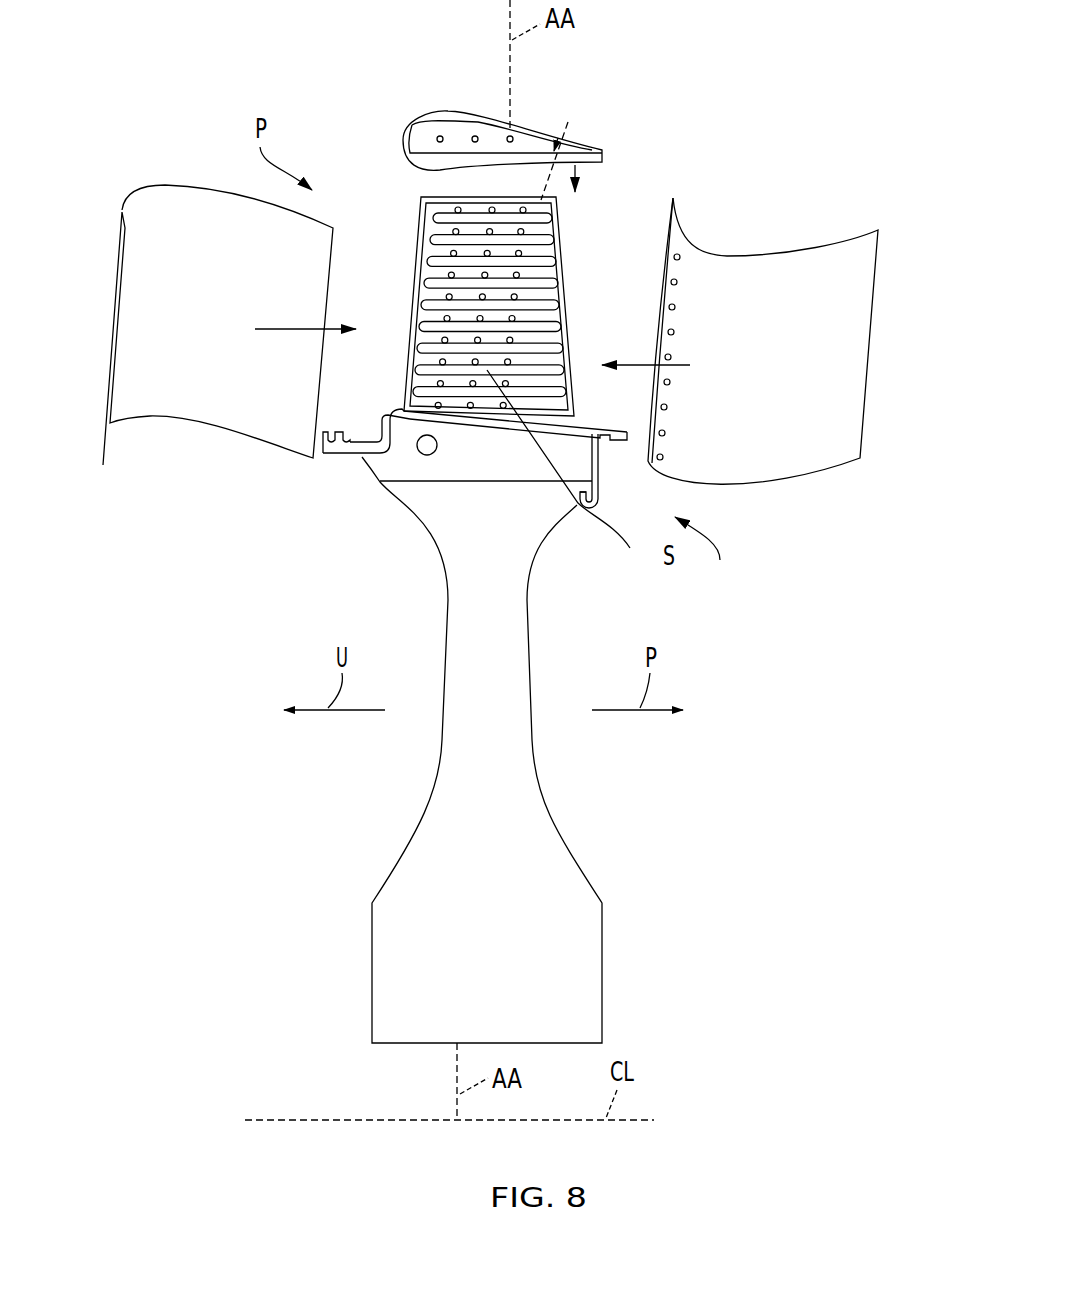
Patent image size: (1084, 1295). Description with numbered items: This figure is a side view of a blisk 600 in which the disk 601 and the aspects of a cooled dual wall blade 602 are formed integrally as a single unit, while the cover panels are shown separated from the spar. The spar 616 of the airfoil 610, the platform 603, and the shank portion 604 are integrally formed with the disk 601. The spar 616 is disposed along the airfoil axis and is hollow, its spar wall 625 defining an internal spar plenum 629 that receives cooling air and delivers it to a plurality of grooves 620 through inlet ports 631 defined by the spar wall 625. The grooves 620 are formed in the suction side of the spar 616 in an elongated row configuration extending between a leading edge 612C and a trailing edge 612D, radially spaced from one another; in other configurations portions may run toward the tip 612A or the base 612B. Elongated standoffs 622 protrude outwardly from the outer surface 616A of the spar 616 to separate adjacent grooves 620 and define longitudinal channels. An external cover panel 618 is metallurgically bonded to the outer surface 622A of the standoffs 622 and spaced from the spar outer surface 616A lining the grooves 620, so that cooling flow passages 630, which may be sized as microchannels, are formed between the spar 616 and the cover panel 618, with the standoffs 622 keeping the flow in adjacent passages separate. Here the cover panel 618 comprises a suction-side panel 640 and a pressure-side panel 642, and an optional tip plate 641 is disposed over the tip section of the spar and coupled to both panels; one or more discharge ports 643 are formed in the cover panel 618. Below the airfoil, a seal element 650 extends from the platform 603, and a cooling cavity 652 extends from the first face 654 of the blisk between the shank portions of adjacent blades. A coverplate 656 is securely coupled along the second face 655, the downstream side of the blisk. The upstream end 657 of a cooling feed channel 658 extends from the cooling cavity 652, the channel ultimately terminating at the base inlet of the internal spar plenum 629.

The blisk 600 is at (798, 140).
The disk 601 is at (517, 770).
The blade 602 is at (700, 203).
The platform 603 is at (460, 423).
The shank portion 604 is at (402, 470).
The airfoil 610 is at (405, 187).
The tip 612A is at (586, 127).
The base 612B is at (406, 416).
The leading edge 612C is at (370, 380).
The trailing edge 612D is at (608, 299).
The spar 616 is at (411, 328).
The outer surface of the spar 616A is at (437, 253).
The cover panel 618 is at (862, 303).
The grooves 620 is at (553, 233).
The standoffs 622 is at (553, 393).
The outer surface of the standoffs 622A is at (578, 504).
The spar wall 625 is at (473, 197).
The internal spar plenum 629 is at (557, 147).
The cooling flow passages 630 is at (530, 383).
The inlet ports 631 is at (444, 316).
The suction-side panel 640 is at (847, 420).
The tip plate 641 is at (477, 134).
The pressure-side panel 642 is at (188, 400).
The discharge ports 643 is at (675, 308).
The seal element 650 is at (330, 456).
The cooling cavity 652 is at (508, 470).
The first face 654 is at (440, 758).
The second face 655 is at (545, 803).
The coverplate 656 is at (564, 475).
The upstream end of the cooling feed channel 657 is at (412, 445).
The cooling feed channel 658 is at (431, 454).